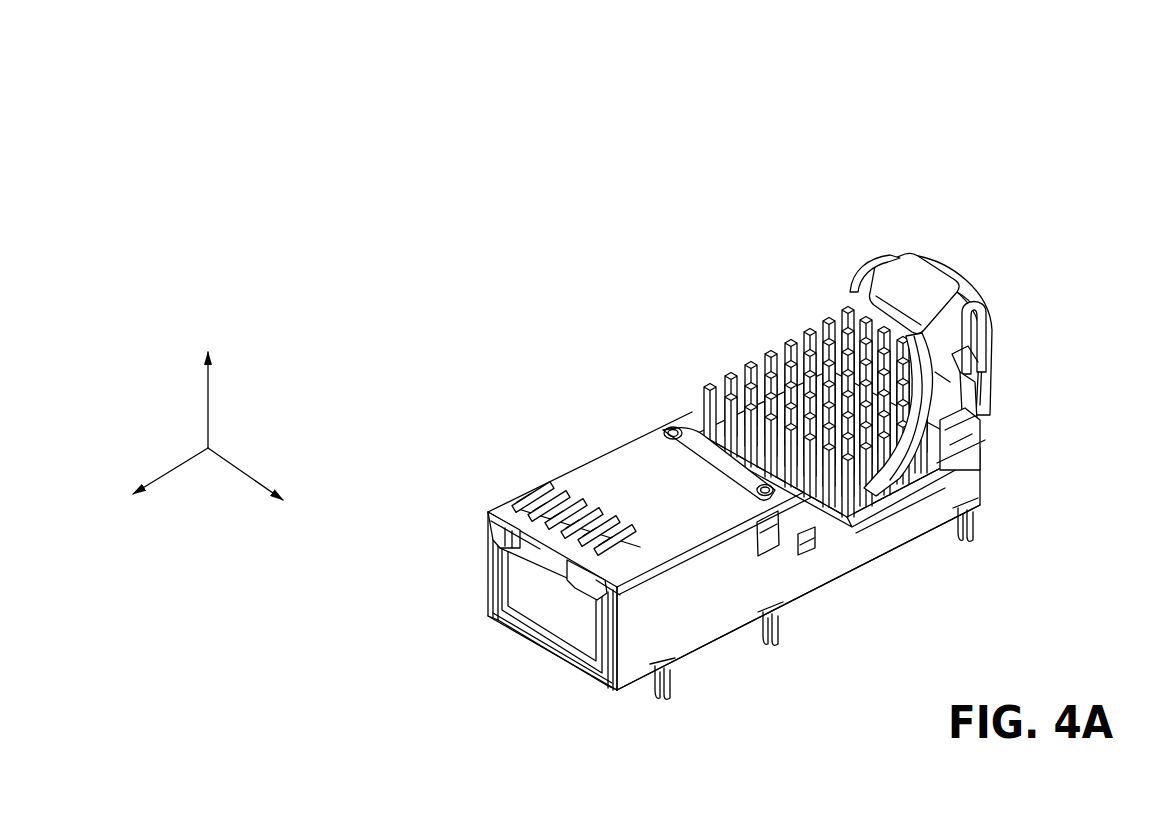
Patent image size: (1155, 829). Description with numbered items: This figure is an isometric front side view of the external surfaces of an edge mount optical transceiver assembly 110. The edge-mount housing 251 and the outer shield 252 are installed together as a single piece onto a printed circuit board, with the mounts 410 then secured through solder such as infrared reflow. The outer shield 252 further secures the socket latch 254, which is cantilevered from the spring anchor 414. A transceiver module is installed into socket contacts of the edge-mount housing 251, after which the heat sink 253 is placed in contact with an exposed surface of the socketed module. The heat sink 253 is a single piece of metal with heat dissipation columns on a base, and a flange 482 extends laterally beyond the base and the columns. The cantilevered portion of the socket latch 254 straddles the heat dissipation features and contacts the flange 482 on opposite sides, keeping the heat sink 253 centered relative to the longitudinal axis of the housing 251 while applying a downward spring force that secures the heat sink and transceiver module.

The edge mount optical transceiver assembly 110 is at (297, 147).
The edge-mount housing 251 is at (527, 640).
The outer shield 252 is at (622, 445).
The heat sink 253 is at (731, 368).
The socket latch 254 is at (914, 256).
The mounts 410 is at (771, 634).
The spring anchor 414 is at (695, 432).
The flange 482 is at (937, 463).